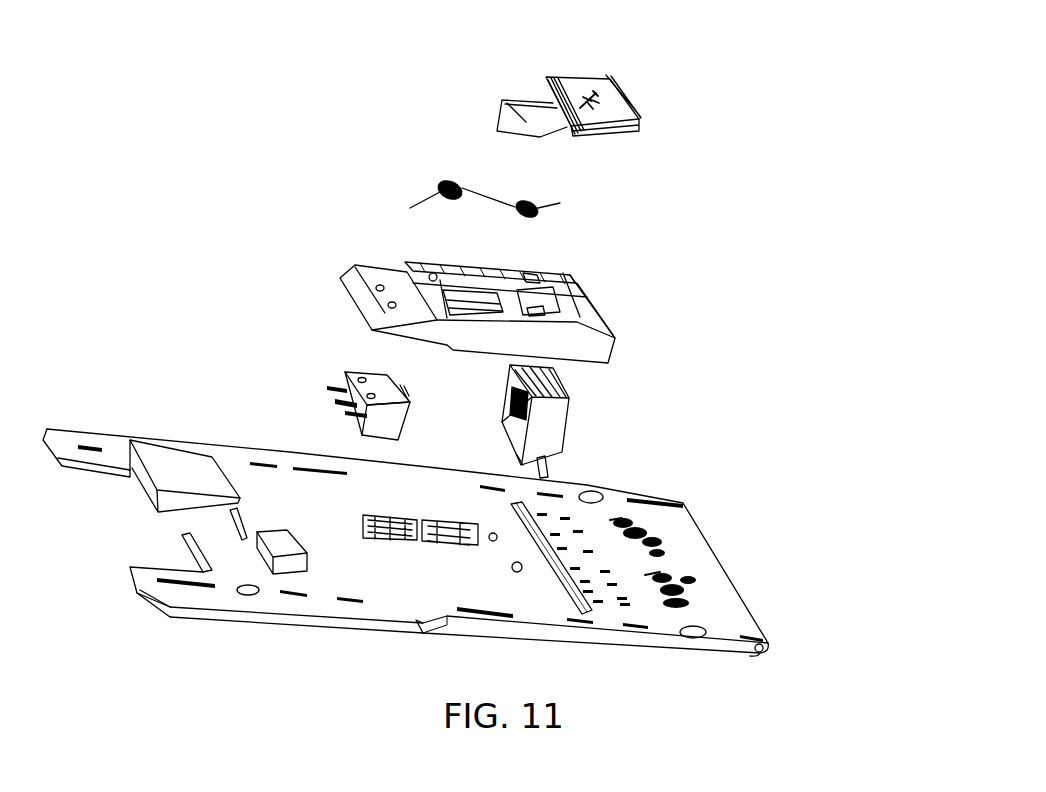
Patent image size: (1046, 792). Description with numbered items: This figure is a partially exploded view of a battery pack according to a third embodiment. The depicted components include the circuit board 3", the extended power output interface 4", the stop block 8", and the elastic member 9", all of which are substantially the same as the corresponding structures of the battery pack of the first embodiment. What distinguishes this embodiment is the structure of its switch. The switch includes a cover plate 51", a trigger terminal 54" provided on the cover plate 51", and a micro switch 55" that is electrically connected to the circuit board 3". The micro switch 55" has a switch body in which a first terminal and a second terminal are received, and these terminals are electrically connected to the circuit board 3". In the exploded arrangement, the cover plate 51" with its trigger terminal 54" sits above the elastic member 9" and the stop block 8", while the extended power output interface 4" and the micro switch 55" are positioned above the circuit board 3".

The circuit board 3 is at (905, 577).
The extended power output interface 4 is at (783, 410).
The stop block 8 is at (797, 297).
The elastic member 9 is at (437, 187).
The cover plate 51 is at (777, 73).
The trigger terminal 54 is at (503, 100).
The micro switch 55 is at (345, 372).